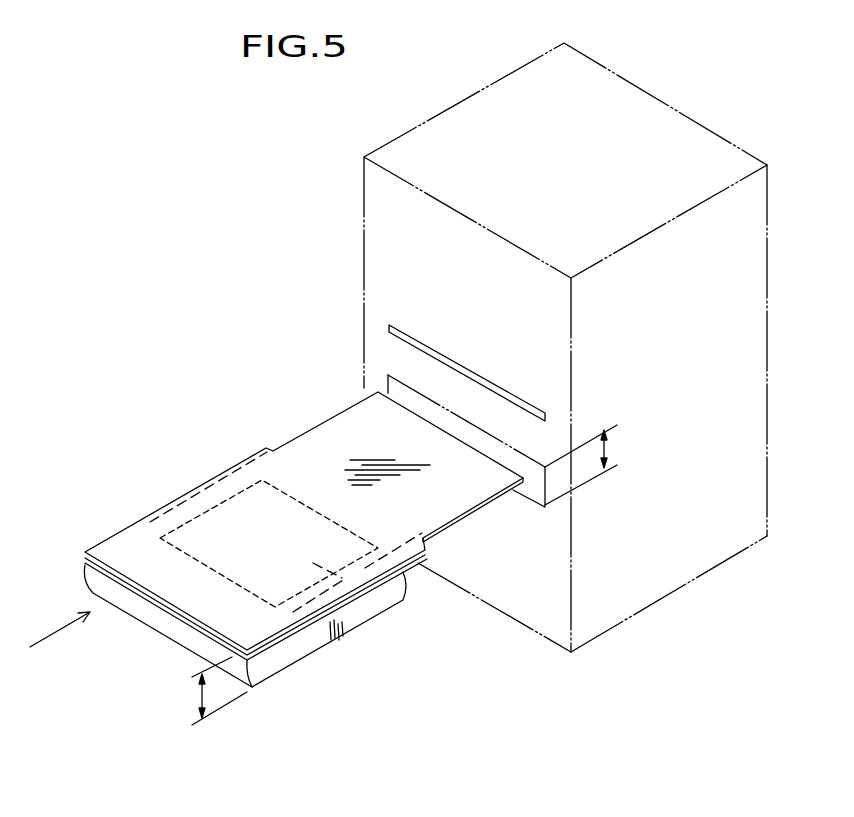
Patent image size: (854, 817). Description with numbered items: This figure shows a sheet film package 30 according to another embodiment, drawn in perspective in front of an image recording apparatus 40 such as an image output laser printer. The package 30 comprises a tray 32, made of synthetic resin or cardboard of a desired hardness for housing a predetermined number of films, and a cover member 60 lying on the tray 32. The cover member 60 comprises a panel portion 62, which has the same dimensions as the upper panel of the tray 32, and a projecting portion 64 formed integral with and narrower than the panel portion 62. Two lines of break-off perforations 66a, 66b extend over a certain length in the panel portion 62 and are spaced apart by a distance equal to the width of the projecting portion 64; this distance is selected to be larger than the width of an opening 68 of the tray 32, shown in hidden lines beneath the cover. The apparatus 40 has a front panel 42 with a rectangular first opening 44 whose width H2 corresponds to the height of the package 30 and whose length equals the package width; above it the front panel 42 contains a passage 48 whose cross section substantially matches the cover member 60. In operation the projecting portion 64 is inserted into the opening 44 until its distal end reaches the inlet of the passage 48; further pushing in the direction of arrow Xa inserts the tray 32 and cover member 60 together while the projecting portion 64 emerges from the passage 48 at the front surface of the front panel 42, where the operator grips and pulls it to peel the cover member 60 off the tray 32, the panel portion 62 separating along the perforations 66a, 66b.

The sheet film package 30 is at (276, 531).
The tray 32 is at (302, 648).
The image recording apparatus 40 is at (520, 377).
The front panel 42 is at (532, 608).
The first opening 44 is at (390, 383).
The passage 48 is at (482, 380).
The cover member 60 is at (295, 514).
The panel portion 62 is at (142, 543).
The projecting portion 64 is at (345, 427).
The perforation 66a is at (375, 565).
The perforation 66b is at (223, 480).
The opening 68 is at (348, 585).